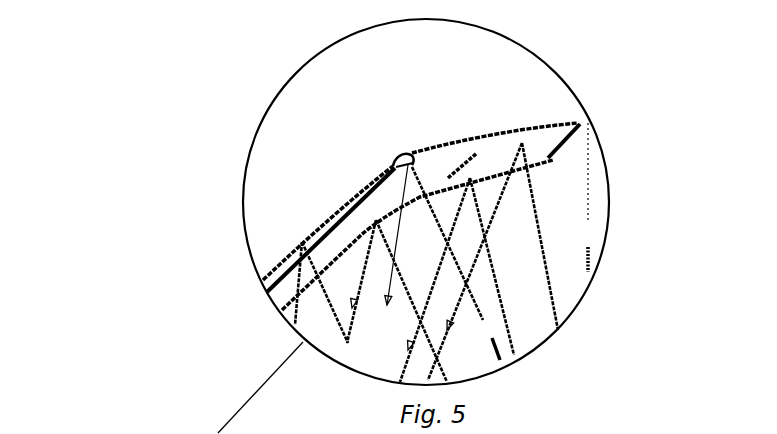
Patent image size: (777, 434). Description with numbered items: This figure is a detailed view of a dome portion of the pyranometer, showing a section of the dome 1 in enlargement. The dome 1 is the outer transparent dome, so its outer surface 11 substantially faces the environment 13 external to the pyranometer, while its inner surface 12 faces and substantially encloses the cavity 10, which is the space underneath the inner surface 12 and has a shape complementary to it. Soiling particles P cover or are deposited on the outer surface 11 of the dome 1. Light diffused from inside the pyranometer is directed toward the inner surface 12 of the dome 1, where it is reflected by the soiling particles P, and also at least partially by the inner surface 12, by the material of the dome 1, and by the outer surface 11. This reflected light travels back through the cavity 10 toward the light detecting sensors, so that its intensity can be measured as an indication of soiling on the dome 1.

The dome 1 is at (575, 143).
The cavity 10 is at (382, 318).
The outer surface 11 is at (317, 206).
The inner surface 12 is at (563, 172).
The environment 13 is at (69, 323).
The soiling particles P is at (390, 147).